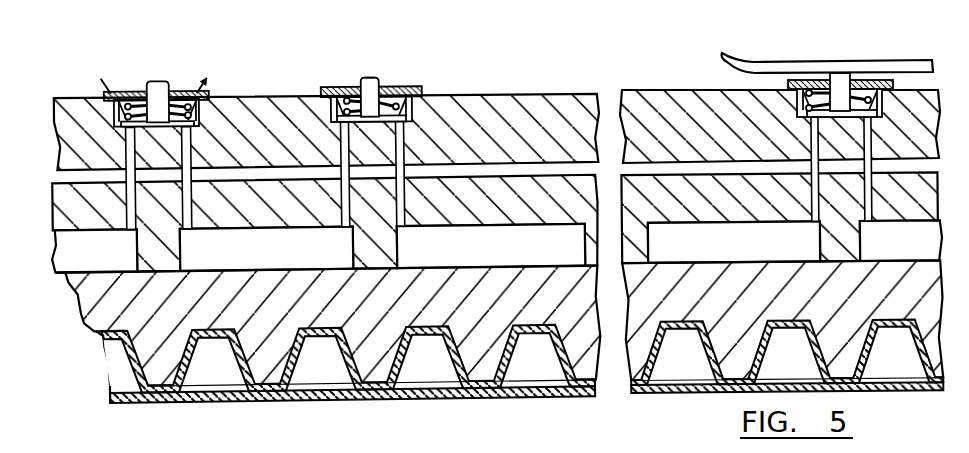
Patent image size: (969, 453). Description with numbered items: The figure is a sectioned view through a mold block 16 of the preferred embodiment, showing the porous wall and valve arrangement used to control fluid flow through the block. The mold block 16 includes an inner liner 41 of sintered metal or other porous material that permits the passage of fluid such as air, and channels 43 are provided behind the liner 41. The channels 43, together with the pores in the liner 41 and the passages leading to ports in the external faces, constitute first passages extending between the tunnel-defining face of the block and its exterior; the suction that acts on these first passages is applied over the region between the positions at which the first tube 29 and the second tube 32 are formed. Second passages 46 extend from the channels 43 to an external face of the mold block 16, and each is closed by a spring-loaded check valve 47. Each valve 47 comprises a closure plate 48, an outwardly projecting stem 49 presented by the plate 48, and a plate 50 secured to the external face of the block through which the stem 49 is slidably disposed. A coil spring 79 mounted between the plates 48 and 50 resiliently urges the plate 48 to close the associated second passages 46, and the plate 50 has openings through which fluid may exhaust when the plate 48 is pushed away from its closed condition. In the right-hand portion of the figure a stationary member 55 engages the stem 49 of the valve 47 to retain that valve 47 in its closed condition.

The mold block 16 is at (542, 83).
The first tube 29 is at (312, 344).
The second tube 32 is at (402, 400).
The inner liner 41 is at (306, 282).
The channels 43 is at (497, 246).
The second passages 46 is at (347, 145).
The spring-loaded check valve 47 is at (172, 76).
The closure plate 48 is at (416, 88).
The stem 49 is at (361, 80).
The plate 50 is at (381, 78).
The stationary members 55 is at (782, 62).
The coil spring 79 is at (332, 88).